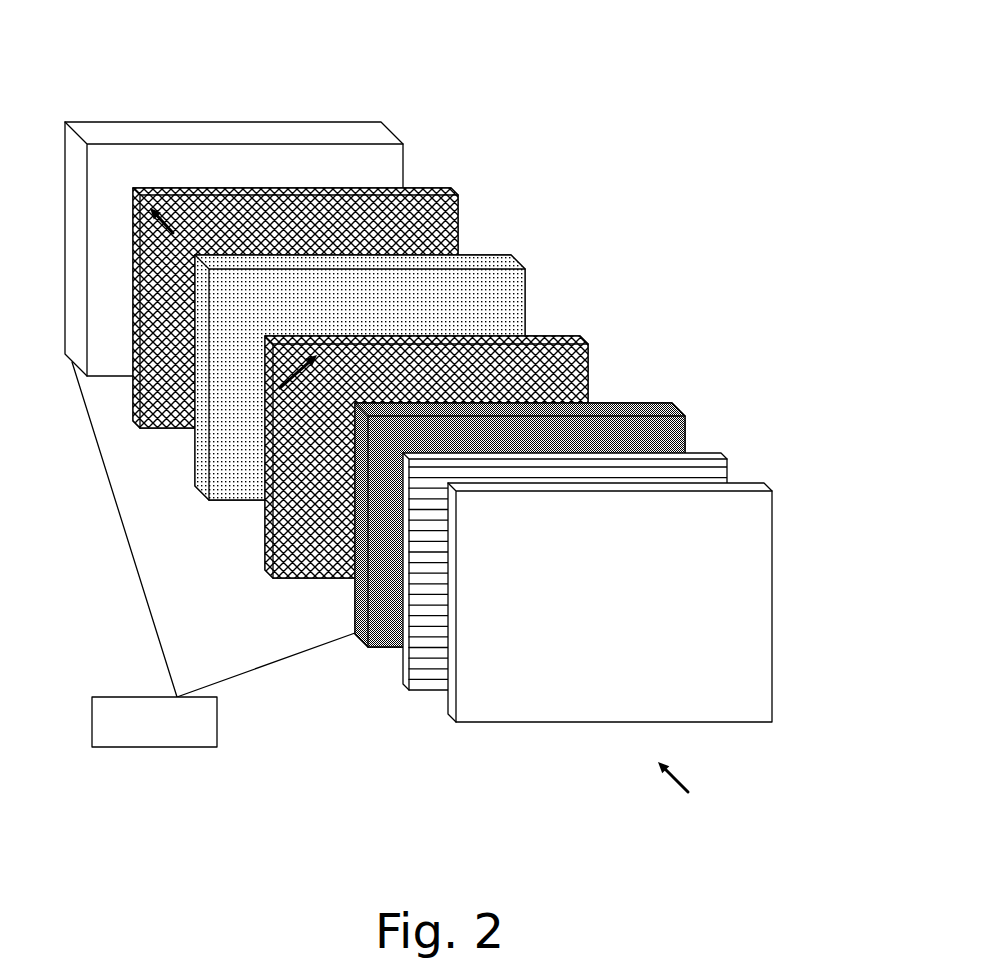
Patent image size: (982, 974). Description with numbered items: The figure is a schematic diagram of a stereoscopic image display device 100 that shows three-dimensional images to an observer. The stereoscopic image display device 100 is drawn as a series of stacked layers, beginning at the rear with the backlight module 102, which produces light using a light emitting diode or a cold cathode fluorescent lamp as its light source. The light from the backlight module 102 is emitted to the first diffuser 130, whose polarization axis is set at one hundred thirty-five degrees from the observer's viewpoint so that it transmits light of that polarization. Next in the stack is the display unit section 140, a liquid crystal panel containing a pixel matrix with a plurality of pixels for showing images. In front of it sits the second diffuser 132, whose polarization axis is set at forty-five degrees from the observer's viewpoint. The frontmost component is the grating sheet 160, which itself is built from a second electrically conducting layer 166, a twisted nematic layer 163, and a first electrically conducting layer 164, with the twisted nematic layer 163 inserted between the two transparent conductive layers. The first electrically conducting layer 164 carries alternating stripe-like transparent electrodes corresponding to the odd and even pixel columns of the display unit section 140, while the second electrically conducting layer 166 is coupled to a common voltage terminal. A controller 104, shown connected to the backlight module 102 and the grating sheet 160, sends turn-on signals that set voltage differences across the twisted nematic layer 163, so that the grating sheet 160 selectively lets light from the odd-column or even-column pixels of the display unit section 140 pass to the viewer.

The stereoscopic image display device 100 is at (476, 23).
The backlight module 102 is at (367, 133).
The controller 104 is at (147, 698).
The first diffuser 130 is at (458, 213).
The display unit section 140 is at (515, 258).
The second diffuser 132 is at (588, 343).
The grating sheet 160 is at (600, 544).
The second electrically conducting layer 166 is at (685, 413).
The twisted nematic layer 163 is at (722, 455).
The first electrically conducting layer 164 is at (643, 586).